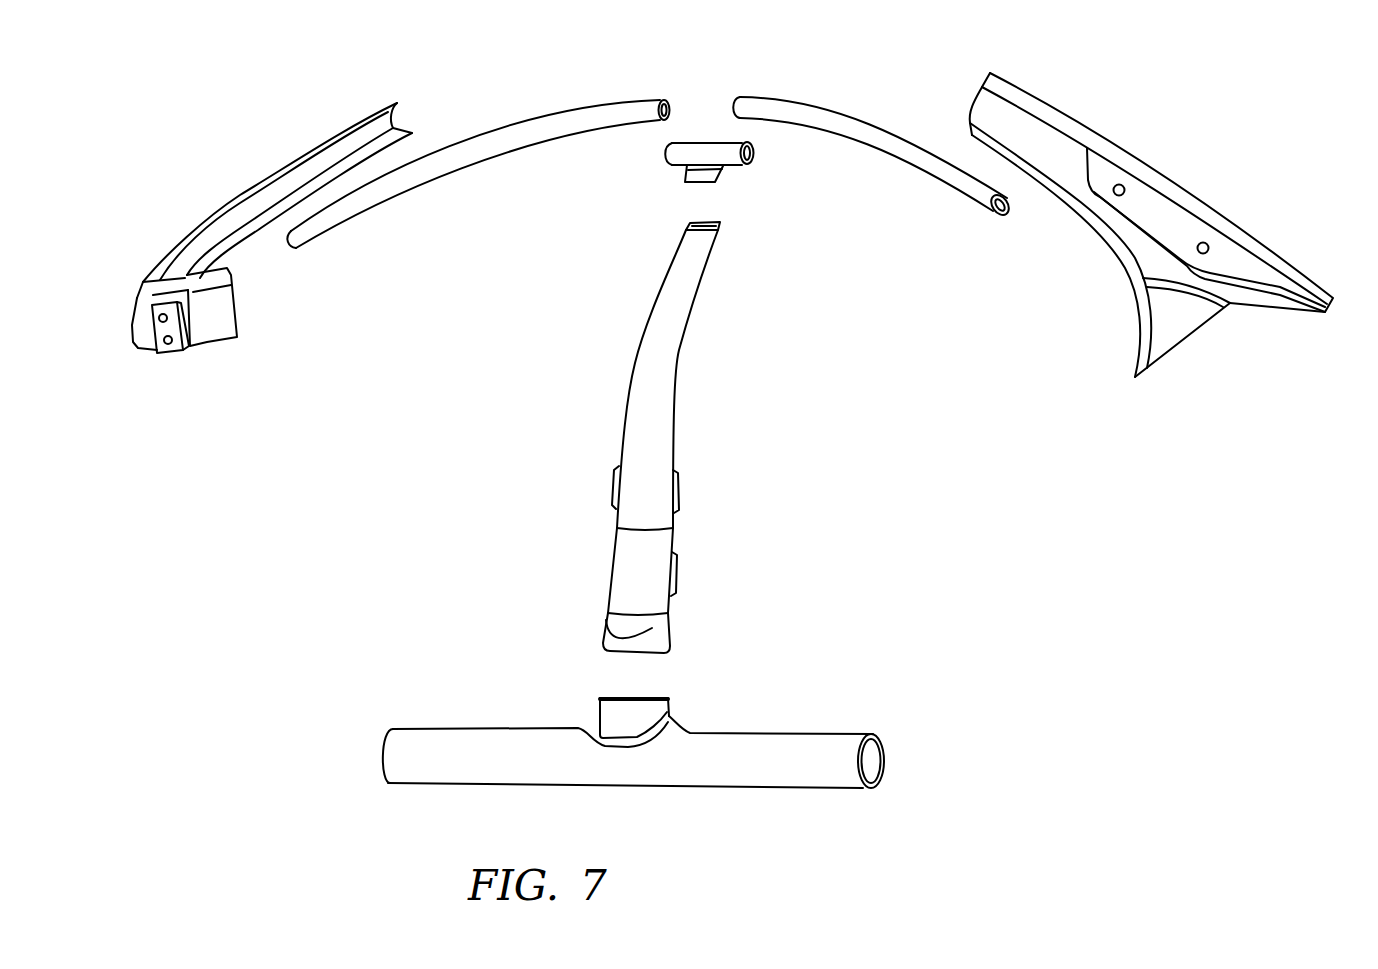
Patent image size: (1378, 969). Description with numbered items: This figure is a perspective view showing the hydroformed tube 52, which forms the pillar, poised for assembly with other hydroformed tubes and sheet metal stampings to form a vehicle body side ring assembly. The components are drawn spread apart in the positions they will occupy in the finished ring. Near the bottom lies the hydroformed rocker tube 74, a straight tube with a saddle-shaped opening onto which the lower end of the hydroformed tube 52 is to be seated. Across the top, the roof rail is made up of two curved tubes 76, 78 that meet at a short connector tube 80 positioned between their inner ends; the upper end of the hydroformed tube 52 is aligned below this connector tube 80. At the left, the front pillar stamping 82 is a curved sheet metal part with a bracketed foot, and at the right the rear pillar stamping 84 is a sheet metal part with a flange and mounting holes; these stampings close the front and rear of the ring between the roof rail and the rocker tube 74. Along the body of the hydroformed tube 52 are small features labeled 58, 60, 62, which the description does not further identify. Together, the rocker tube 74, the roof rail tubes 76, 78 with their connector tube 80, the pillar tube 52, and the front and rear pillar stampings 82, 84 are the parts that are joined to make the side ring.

The hydroformed tube 52 is at (613, 416).
The bracket 58 is at (612, 487).
The bracket 60 is at (680, 482).
The bracket 62 is at (678, 577).
The hydroformed rocker tube 74 is at (778, 742).
The tube 76 is at (642, 107).
The tube 78 is at (802, 105).
The connector tube 80 is at (708, 147).
The front pillar stamping 82 is at (275, 185).
The rear pillar stamping 84 is at (1167, 210).